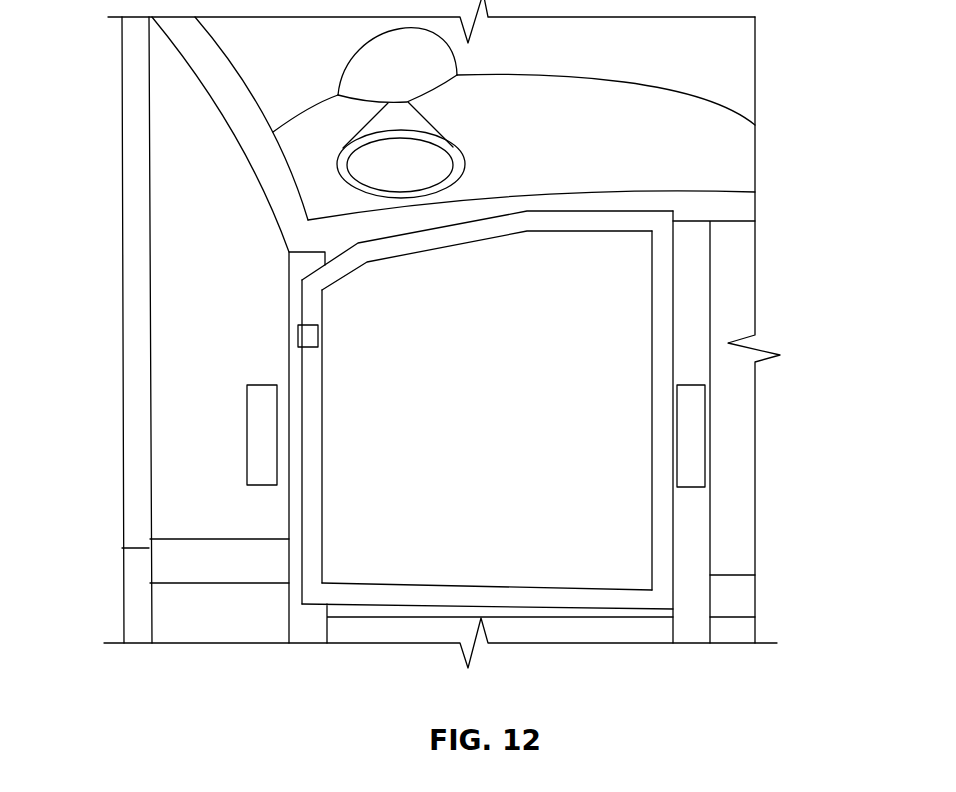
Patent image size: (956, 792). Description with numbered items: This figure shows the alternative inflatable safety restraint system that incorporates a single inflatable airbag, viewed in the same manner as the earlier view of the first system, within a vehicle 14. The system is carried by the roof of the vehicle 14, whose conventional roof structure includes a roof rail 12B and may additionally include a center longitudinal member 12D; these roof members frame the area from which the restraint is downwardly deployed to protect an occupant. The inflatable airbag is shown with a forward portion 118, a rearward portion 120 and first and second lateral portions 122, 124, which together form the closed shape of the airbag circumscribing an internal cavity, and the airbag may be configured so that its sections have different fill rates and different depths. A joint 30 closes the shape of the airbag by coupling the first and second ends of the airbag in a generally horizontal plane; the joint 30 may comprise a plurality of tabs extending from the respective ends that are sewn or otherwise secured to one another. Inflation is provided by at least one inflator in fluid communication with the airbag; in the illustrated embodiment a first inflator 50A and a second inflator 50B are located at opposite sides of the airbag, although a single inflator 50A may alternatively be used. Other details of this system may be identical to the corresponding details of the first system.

The vehicle 14 is at (137, 175).
The joint 30 is at (310, 337).
The first inflator 50A is at (247, 472).
The second inflator 50B is at (693, 457).
The roof rail 12B is at (297, 495).
The center longitudinal member 12D is at (695, 287).
The forward portion 118 is at (497, 231).
The rearward portion 120 is at (435, 593).
The first lateral portion 122 is at (313, 435).
The second lateral portion 124 is at (660, 354).